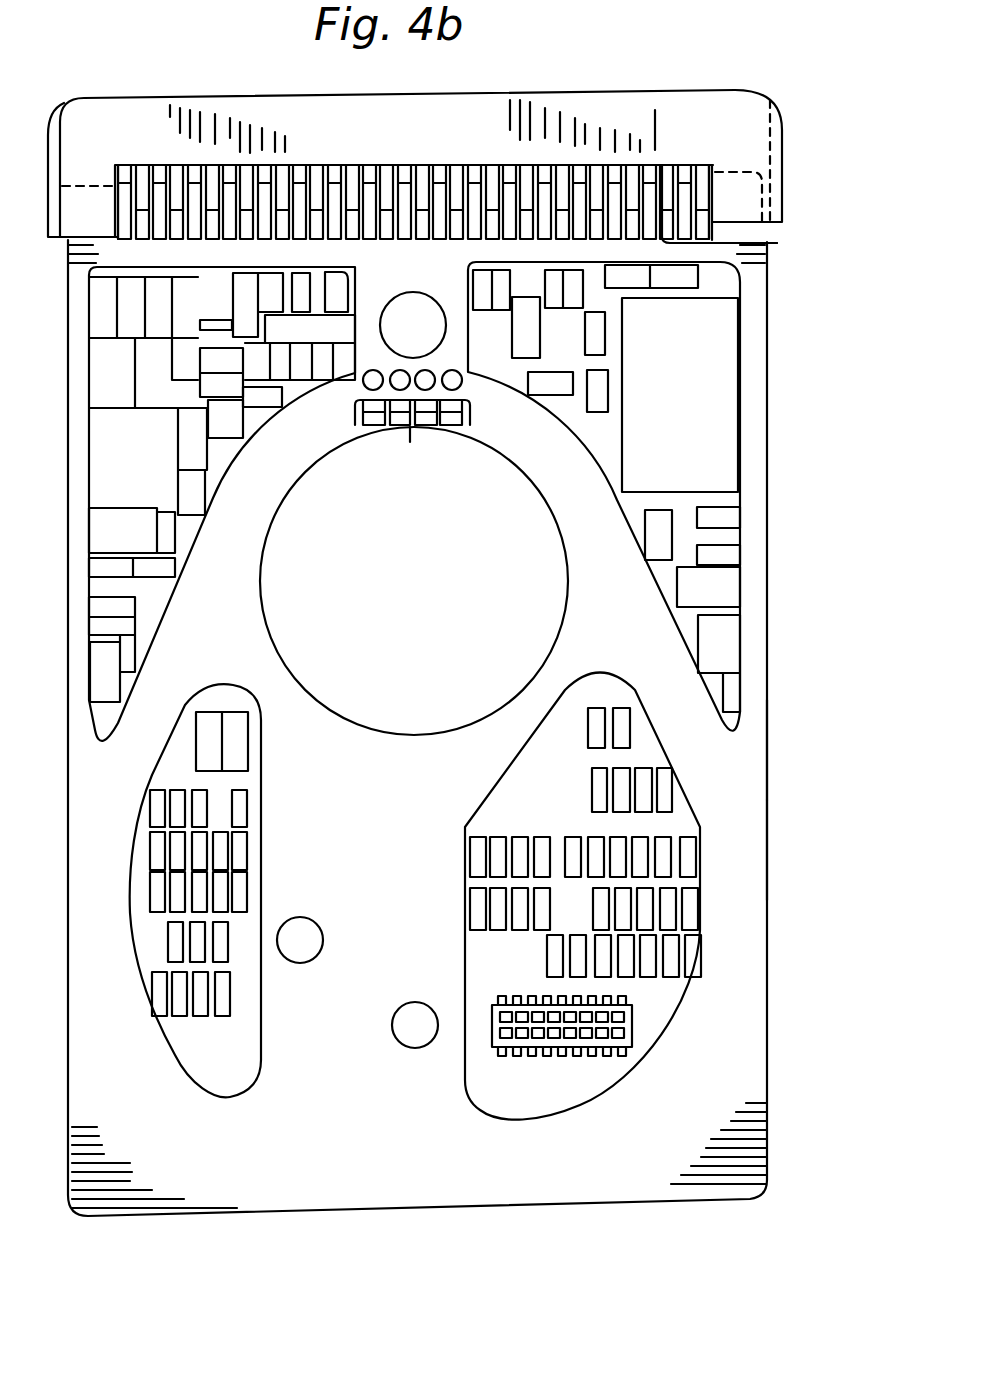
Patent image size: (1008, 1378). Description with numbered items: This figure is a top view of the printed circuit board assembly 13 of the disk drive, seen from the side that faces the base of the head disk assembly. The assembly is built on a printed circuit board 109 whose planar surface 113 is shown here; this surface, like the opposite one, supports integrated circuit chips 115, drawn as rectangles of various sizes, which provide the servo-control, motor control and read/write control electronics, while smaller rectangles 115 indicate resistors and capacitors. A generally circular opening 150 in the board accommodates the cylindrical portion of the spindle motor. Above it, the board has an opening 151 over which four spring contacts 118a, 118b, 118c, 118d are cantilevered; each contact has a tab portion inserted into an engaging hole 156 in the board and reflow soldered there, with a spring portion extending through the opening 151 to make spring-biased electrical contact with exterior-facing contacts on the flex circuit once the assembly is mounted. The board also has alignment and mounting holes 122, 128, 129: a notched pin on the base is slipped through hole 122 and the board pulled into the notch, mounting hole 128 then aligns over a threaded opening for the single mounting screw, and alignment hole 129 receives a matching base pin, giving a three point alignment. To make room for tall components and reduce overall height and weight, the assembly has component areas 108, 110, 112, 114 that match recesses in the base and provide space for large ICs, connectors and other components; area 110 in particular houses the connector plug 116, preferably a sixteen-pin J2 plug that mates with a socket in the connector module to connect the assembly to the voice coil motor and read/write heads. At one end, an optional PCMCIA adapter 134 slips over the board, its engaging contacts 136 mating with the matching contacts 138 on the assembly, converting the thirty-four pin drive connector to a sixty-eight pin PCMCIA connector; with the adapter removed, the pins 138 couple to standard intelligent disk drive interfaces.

The printed circuit board assembly 13 is at (112, 1219).
The component area 108 is at (237, 1058).
The printed circuit board 109 is at (767, 753).
The component area 110 is at (533, 1080).
The component area 112 is at (190, 538).
The planar surface 113 is at (750, 845).
The component area 114 is at (604, 458).
The integrated circuit chips 115 is at (705, 408).
The connector plug 116 is at (632, 1035).
The spring contact 118a is at (372, 427).
The spring contact 118b is at (397, 427).
The spring contact 118c is at (425, 427).
The spring contact 118d is at (452, 427).
The alignment and mounting hole 122 is at (417, 324).
The mounting hole 128 is at (415, 1012).
The alignment hole 129 is at (306, 938).
The PCMCIA adapter 134 is at (606, 90).
The engaging contacts 136 is at (662, 165).
The contacts 138 is at (740, 246).
The circular opening 150 is at (414, 581).
The opening 151 is at (410, 436).
The engaging hole 156 is at (456, 361).